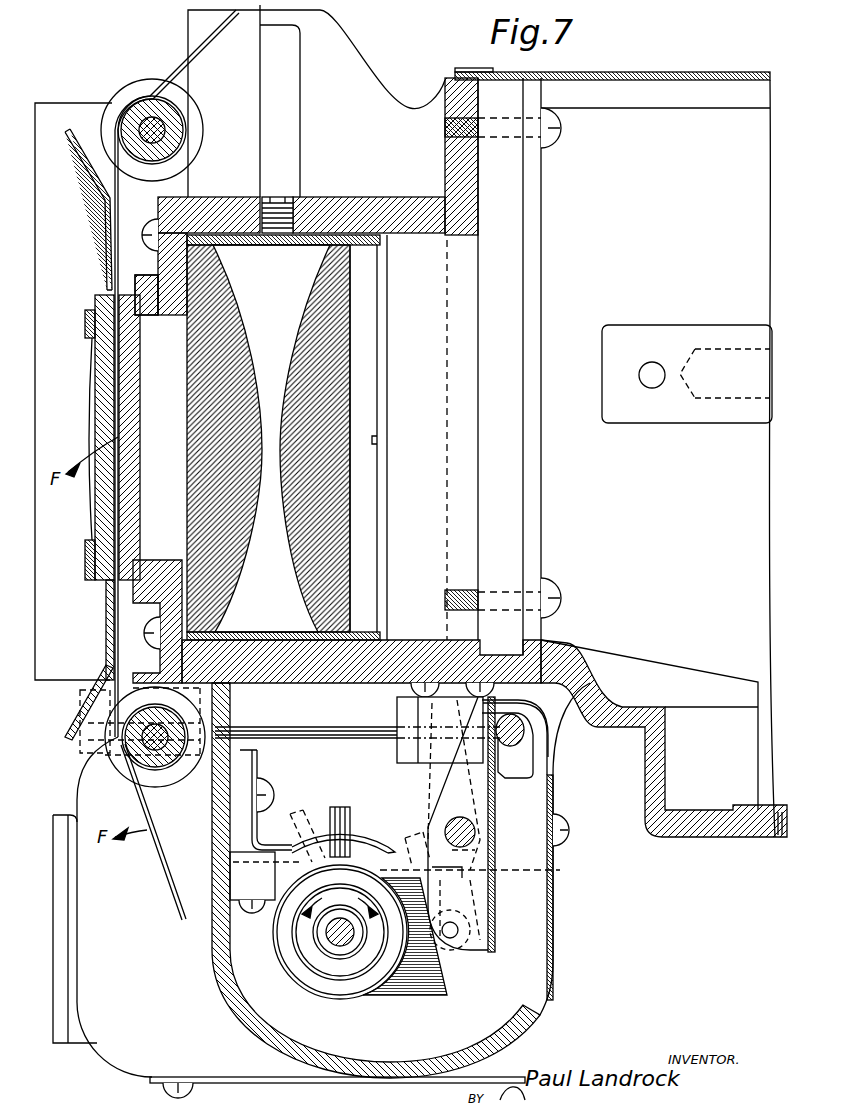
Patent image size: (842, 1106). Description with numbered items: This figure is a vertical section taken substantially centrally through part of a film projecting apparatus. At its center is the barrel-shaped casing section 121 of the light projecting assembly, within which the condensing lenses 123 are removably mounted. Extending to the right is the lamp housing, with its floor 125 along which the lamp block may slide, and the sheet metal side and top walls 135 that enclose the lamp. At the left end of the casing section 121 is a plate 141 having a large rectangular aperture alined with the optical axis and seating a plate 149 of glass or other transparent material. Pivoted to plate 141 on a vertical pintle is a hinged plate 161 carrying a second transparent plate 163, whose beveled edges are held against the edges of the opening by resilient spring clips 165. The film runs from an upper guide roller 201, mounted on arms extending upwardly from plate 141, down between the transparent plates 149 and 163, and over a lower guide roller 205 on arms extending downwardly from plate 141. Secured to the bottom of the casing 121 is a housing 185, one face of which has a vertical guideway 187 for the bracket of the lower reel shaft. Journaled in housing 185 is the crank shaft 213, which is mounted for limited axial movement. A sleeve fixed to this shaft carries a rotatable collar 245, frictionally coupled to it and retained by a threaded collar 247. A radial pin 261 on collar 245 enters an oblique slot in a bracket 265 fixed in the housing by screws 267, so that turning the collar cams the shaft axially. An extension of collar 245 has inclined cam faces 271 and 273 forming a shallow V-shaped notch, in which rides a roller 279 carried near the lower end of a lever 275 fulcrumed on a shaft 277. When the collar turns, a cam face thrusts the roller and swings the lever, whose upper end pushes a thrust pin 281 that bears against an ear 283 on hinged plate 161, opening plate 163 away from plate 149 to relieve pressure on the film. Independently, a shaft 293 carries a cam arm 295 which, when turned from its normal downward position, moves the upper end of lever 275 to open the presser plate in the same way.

The casing section 121 is at (365, 200).
The condensing lenses 123 is at (308, 292).
The floor 125 is at (720, 825).
The side and top walls 135 is at (705, 74).
The plate 141 is at (150, 285).
The transparent plate 149 is at (140, 512).
The hinged plate 161 is at (107, 245).
The transparent plate 163 is at (100, 405).
The spring clips 165 is at (85, 328).
The housing 185 is at (196, 1027).
The guideway 187 is at (62, 1040).
The guide roller 201 is at (156, 104).
The guide roller 205 is at (167, 758).
The shaft 213 is at (342, 934).
The collar 245 is at (425, 990).
The collar 247 is at (288, 940).
The radial pin 261 is at (341, 813).
The bracket 265 is at (365, 842).
The screws 267 is at (262, 792).
The cam face 271 is at (562, 870).
The cam face 273 is at (455, 968).
The lever 275 is at (460, 785).
The shaft 277 is at (472, 828).
The roller 279 is at (463, 947).
The thrust pin 281 is at (302, 730).
The ear 283 is at (110, 702).
The shaft 293 is at (520, 732).
The cam arm 295 is at (518, 756).